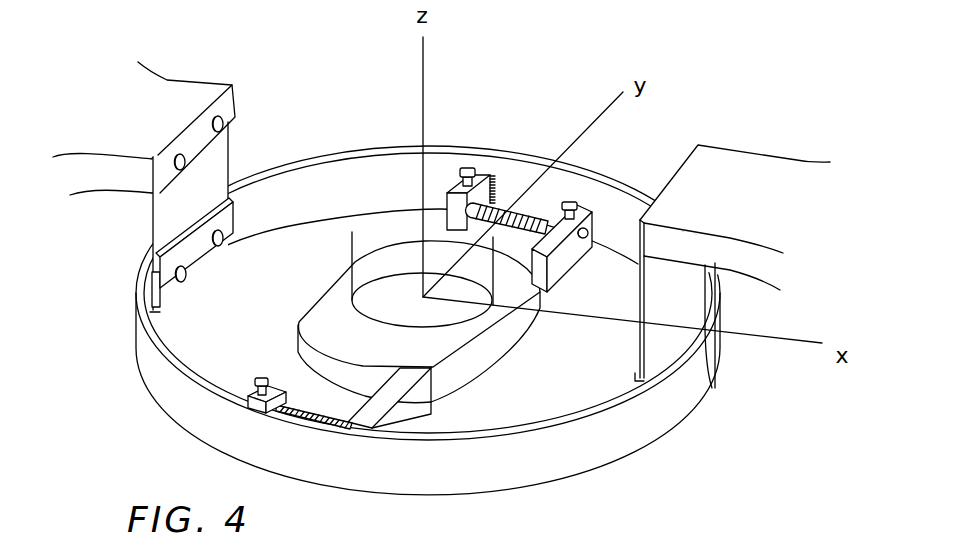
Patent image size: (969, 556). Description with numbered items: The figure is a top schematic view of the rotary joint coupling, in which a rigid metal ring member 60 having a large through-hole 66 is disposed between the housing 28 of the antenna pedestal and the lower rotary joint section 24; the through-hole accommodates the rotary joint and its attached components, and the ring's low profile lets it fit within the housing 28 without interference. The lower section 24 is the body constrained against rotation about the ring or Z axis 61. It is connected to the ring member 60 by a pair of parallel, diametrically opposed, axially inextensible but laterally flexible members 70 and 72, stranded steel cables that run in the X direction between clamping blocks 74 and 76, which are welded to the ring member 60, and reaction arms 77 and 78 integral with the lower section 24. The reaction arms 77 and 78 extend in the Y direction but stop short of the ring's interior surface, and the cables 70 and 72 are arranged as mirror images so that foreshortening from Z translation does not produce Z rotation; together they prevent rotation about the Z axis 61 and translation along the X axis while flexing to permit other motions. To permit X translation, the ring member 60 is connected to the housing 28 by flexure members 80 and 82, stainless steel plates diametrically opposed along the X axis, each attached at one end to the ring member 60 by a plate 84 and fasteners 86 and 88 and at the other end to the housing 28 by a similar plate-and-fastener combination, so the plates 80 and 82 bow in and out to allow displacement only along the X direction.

The lower rotary joint section 24 is at (503, 335).
The housing 28 is at (161, 103).
The ring member 60 is at (532, 458).
The Z axis 61 is at (423, 61).
The through-hole 66 is at (320, 202).
The flexible member 70 is at (313, 403).
The flexible member 72 is at (500, 213).
The clamping block 74 is at (257, 383).
The clamping block 76 is at (455, 188).
The reaction arm 77 is at (408, 408).
The reaction arm 78 is at (558, 260).
The flexure member 80 is at (170, 204).
The flexure member 82 is at (660, 297).
The plate 84 is at (196, 257).
The fastener 86 is at (165, 320).
The fastener 88 is at (222, 243).